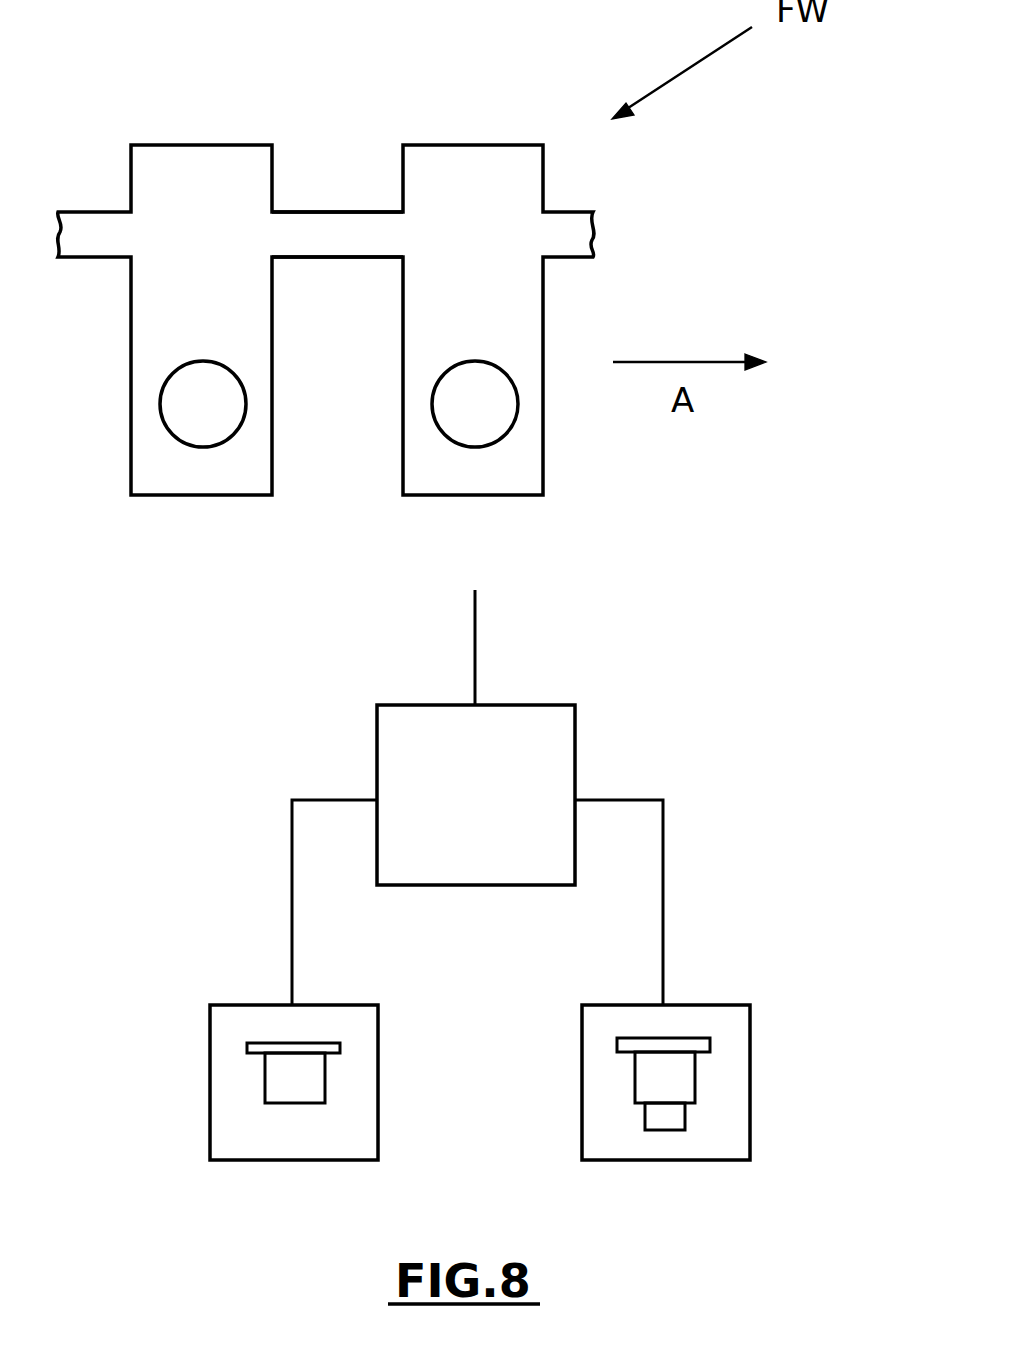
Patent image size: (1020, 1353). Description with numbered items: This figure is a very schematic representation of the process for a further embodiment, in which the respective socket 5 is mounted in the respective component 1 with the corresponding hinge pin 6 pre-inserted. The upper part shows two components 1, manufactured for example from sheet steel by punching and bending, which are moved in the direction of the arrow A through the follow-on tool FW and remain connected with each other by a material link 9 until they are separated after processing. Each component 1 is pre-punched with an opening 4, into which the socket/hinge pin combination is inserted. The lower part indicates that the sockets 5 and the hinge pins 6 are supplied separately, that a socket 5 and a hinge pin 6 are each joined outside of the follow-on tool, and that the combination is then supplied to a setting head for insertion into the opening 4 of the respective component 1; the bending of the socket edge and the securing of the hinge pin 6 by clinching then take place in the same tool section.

The component 1 is at (240, 310).
The opening 4 is at (227, 404).
The socket 5 is at (282, 1082).
The hinge pin 6 is at (677, 1083).
The material link 9 is at (456, 197).